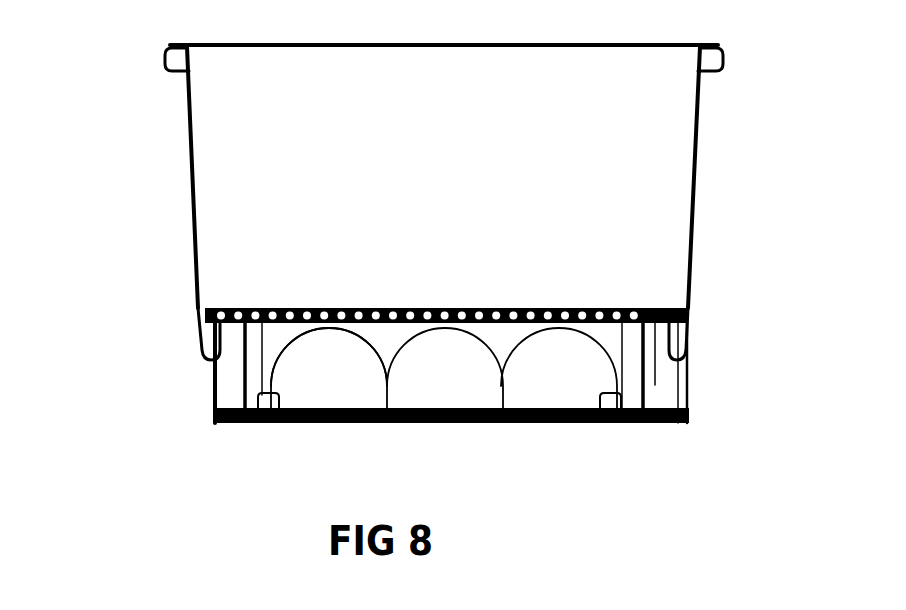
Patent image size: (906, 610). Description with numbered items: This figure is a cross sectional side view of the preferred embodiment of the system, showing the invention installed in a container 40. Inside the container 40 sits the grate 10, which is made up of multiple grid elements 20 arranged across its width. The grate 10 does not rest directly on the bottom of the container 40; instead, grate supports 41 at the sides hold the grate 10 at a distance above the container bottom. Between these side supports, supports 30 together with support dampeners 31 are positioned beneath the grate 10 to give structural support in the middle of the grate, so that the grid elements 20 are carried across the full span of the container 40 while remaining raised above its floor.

The grate 10 is at (640, 310).
The grid elements 20 is at (598, 328).
The supports 30 is at (389, 393).
The support dampeners 31 is at (372, 350).
The container 40 is at (191, 187).
The grate supports 41 is at (213, 317).